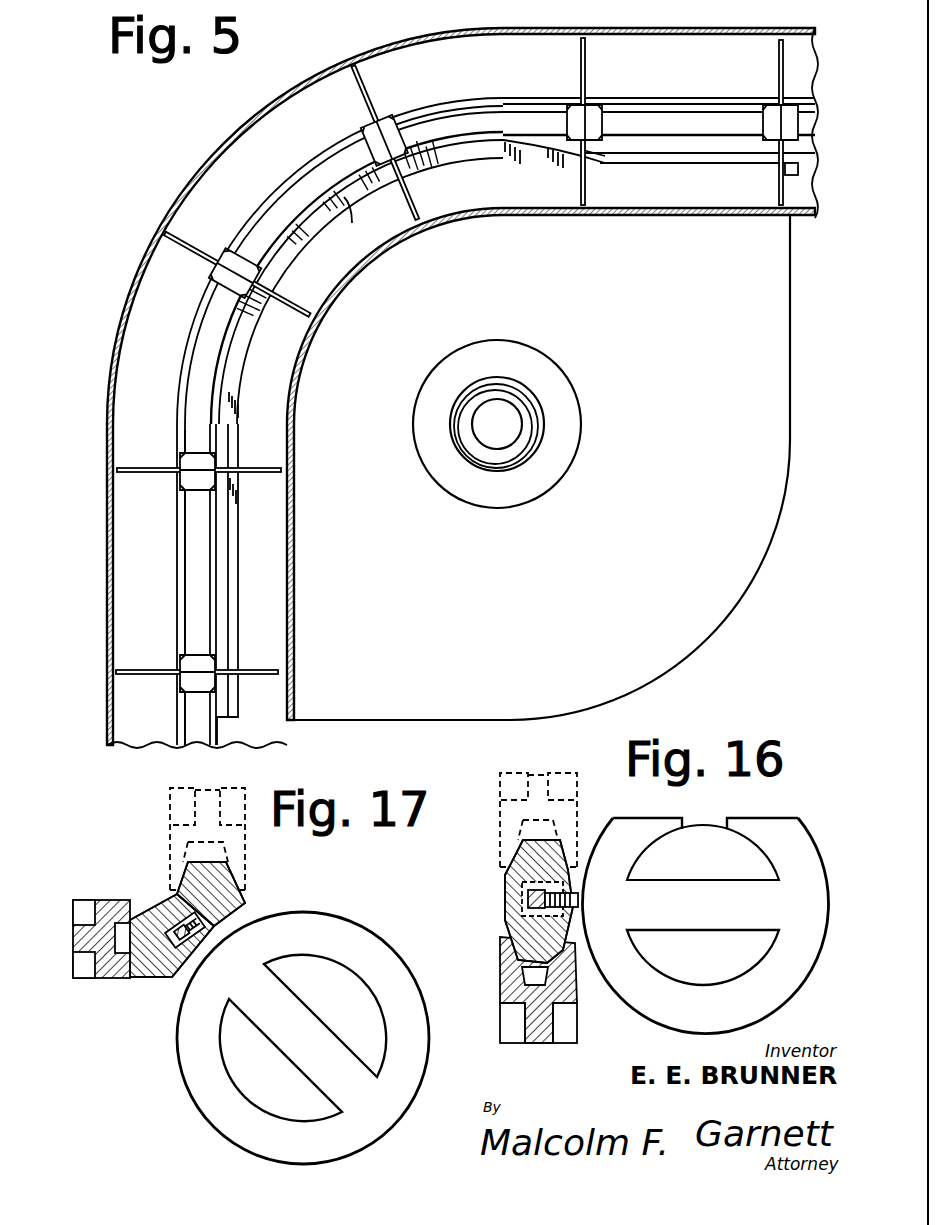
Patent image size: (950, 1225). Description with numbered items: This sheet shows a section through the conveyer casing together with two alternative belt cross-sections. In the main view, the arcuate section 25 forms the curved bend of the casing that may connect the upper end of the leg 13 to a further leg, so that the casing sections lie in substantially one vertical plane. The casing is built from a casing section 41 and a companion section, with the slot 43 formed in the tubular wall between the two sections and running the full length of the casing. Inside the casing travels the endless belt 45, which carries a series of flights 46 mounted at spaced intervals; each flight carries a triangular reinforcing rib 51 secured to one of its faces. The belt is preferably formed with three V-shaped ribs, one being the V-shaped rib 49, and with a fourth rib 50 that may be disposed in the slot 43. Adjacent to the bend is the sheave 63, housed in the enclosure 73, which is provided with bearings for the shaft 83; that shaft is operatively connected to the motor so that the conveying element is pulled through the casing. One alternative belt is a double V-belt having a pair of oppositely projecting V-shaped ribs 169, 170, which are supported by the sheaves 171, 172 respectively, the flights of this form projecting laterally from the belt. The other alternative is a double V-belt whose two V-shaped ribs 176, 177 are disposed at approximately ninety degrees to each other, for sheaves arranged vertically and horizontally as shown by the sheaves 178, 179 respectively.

In FIG. 5, the arcuate section 25 is at (270, 128).
In FIG. 5, the casing section 41 is at (142, 265).
In FIG. 5, the slot 43 is at (180, 392).
In FIG. 5, the endless belt 45 is at (200, 614).
In FIG. 5, the flight 46 is at (578, 72).
In FIG. 5, the V-shaped rib 49 is at (222, 568).
In FIG. 5, the fourth rib 50 is at (676, 126).
In FIG. 5, the reinforcing rib 51 is at (370, 148).
In FIG. 5, the sheave 63 is at (370, 282).
In FIG. 5, the enclosure 73 is at (772, 466).
In FIG. 5, the shaft 83 is at (512, 424).
In FIG. 16, the leg 13 is at (692, 897).
In FIG. 16, the V-shaped rib 169 is at (522, 857).
In FIG. 16, the V-shaped rib 170 is at (525, 957).
In FIG. 16, the sheave 171 is at (568, 815).
In FIG. 16, the sheave 172 is at (565, 988).
In FIG. 17, the V-shaped rib 176 is at (228, 878).
In FIG. 17, the V-shaped rib 177 is at (155, 958).
In FIG. 17, the sheave 178 is at (178, 843).
In FIG. 17, the sheave 179 is at (110, 970).